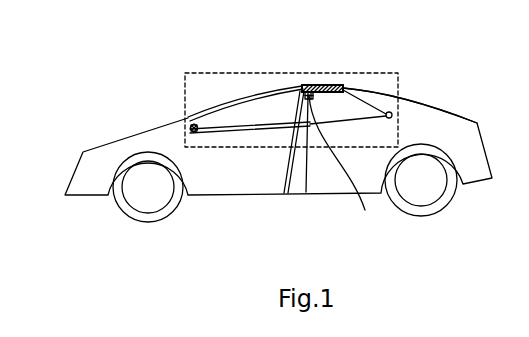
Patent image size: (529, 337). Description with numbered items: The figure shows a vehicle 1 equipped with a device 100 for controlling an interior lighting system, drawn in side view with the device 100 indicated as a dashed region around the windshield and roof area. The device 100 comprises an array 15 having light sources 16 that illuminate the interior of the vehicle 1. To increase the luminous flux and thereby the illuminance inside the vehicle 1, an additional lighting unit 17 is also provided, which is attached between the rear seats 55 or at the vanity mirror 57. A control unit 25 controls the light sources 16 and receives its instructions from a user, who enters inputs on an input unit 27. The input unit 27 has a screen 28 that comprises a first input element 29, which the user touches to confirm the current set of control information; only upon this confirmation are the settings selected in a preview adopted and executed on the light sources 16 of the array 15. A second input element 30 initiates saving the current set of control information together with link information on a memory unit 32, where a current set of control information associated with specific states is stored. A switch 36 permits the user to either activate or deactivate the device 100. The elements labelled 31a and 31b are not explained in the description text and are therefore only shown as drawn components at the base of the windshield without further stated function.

The vehicle 1 is at (433, 63).
The device 100 is at (187, 73).
The array 15 is at (327, 85).
The light sources 16 is at (341, 87).
The additional lighting unit 17 is at (398, 100).
The control unit 25 is at (302, 85).
The input unit 27 is at (306, 85).
The screen 28 is at (307, 83).
The first input element 29 is at (348, 55).
The second input element 30 is at (260, 55).
The first camera 31a is at (189, 118).
The second camera 31b is at (114, 92).
The memory unit 32 is at (114, 92).
The switch 36 is at (306, 192).
The rear seats 55 is at (390, 113).
The vanity mirror 57 is at (343, 165).